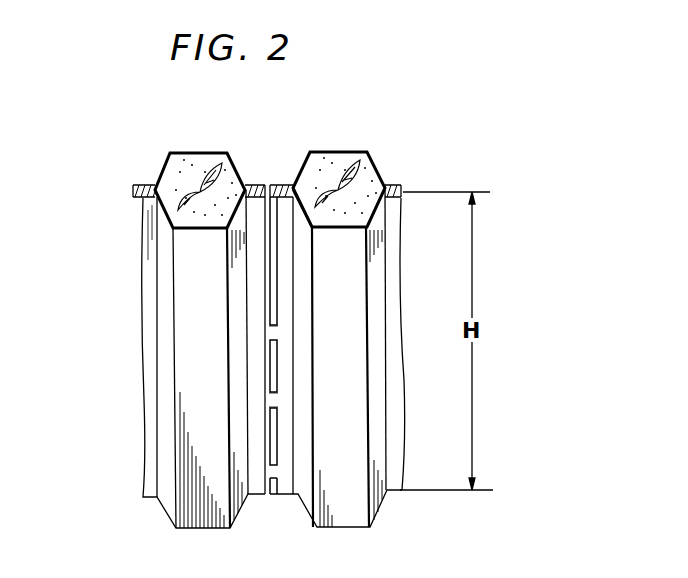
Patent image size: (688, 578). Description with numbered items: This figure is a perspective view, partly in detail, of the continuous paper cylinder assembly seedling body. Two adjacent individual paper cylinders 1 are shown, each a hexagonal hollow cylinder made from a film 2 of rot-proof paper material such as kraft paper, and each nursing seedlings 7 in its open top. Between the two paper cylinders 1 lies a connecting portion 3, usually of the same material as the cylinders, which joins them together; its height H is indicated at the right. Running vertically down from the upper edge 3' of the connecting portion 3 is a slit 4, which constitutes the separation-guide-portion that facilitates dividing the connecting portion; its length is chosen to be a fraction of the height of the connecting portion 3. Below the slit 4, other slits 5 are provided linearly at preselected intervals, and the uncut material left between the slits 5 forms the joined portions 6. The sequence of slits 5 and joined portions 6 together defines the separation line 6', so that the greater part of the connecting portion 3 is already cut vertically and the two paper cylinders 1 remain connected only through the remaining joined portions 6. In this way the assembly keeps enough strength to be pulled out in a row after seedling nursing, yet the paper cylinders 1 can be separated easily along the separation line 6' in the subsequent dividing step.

The paper cylinder 1 is at (226, 172).
The film 2 is at (190, 154).
The connecting portion 3 is at (201, 169).
The upper edge of the connecting portion 3' is at (335, 167).
The slit 4 is at (276, 298).
The slits 5 is at (273, 370).
The joined portions 6 is at (240, 426).
The separation line 6' is at (240, 367).
The seedlings 7 is at (340, 168).